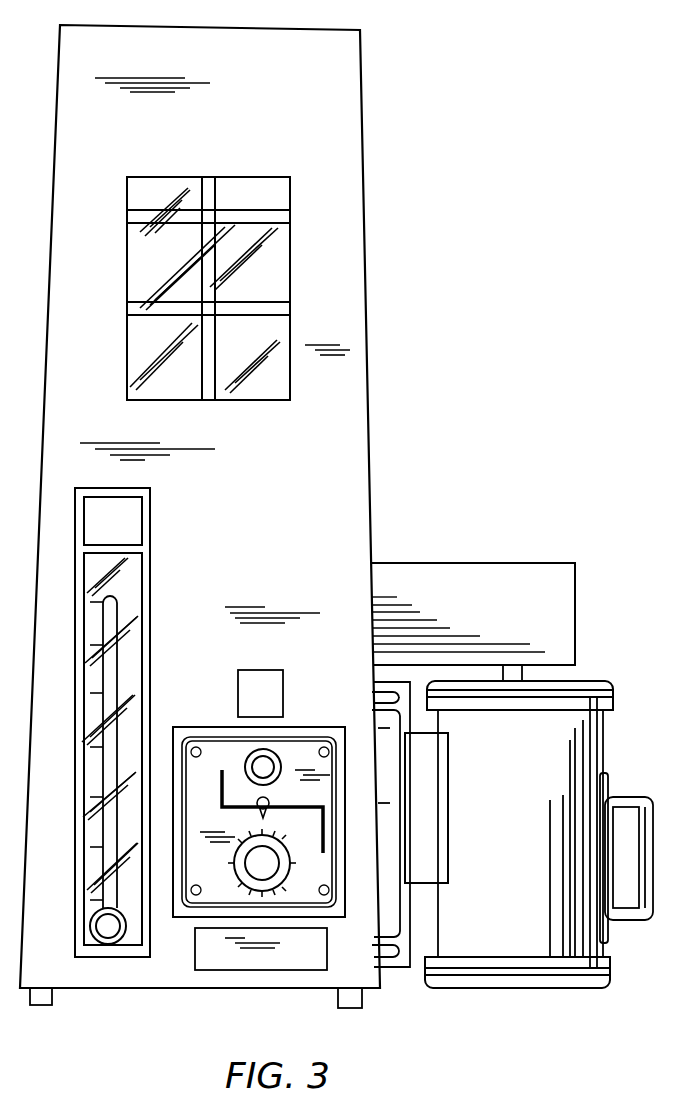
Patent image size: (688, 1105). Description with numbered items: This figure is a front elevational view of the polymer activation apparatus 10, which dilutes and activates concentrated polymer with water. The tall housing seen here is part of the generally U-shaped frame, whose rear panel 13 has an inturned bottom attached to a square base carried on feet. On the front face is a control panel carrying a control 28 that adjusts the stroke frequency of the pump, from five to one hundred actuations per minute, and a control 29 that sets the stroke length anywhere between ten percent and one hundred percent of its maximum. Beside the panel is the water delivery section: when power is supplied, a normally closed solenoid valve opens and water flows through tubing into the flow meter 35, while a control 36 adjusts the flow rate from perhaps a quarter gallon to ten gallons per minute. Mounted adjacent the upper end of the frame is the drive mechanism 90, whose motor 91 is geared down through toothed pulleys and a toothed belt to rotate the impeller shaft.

The polymer activation apparatus 10 is at (433, 267).
The rear panel 13 is at (357, 404).
The control 28 is at (263, 766).
The control 29 is at (262, 868).
The flow meter 35 is at (150, 590).
The control 36 is at (108, 933).
The drive mechanism 90 is at (601, 671).
The motor 91 is at (597, 768).